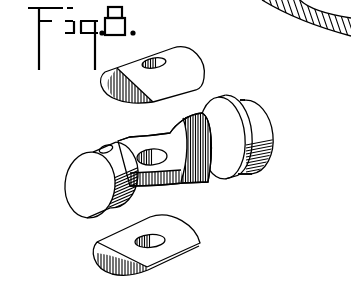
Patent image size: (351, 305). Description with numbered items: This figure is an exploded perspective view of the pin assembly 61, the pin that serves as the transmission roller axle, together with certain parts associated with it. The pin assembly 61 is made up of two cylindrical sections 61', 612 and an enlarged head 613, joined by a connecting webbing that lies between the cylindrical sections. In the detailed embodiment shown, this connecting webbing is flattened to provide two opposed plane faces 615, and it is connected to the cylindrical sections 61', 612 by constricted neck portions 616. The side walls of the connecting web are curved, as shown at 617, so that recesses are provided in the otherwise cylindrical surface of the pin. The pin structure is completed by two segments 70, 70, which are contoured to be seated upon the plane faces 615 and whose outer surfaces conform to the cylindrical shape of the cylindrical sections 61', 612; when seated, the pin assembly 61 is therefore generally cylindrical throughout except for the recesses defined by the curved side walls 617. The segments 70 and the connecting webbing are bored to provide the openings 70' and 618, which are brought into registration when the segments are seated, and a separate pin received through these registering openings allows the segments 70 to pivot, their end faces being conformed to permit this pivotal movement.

The pin assembly 61 is at (181, 159).
The cylindrical section 61' is at (99, 176).
The cylindrical section 612 is at (223, 128).
The enlarged head 613 is at (258, 122).
The plane faces 615 is at (133, 146).
The constricted neck portions 616 is at (192, 115).
The curved side walls 617 is at (175, 183).
The opening 618 is at (149, 151).
The segments 70 is at (156, 158).
The opening 70' is at (166, 130).